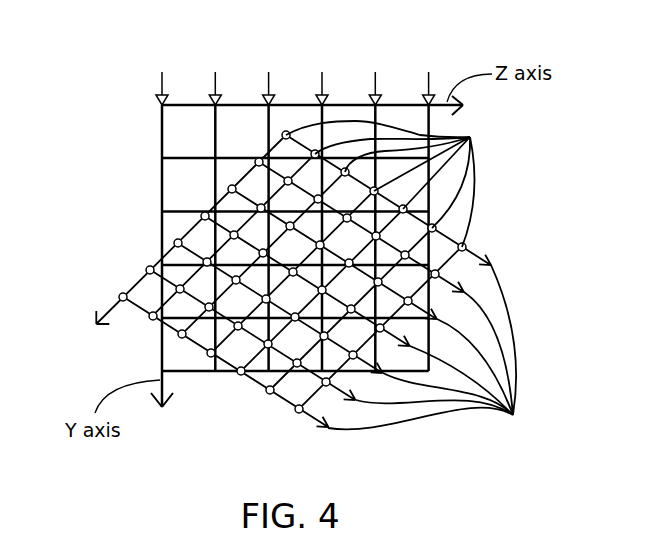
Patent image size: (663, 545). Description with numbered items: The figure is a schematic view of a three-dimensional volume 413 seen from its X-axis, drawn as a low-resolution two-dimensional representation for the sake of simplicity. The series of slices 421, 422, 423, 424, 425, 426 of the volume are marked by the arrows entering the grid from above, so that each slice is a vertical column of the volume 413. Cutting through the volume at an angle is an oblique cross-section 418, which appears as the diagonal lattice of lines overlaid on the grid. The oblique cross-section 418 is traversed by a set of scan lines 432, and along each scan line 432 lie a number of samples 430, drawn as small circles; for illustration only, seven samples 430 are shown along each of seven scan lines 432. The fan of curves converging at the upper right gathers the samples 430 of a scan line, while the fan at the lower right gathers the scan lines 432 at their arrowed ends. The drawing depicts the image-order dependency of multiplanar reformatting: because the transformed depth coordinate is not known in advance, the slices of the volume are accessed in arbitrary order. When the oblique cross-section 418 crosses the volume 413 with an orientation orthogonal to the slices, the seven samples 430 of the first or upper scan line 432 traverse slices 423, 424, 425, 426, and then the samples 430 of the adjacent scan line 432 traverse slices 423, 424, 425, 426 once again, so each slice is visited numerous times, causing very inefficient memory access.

The three-dimensional volume 413 is at (183, 185).
The oblique cross-section 418 is at (287, 401).
The slice 421 is at (147, 76).
The slice 422 is at (200, 76).
The slice 423 is at (254, 76).
The slice 424 is at (307, 76).
The slice 425 is at (360, 76).
The slice 426 is at (413, 76).
The samples 430 is at (395, 179).
The scan line 432 is at (430, 356).